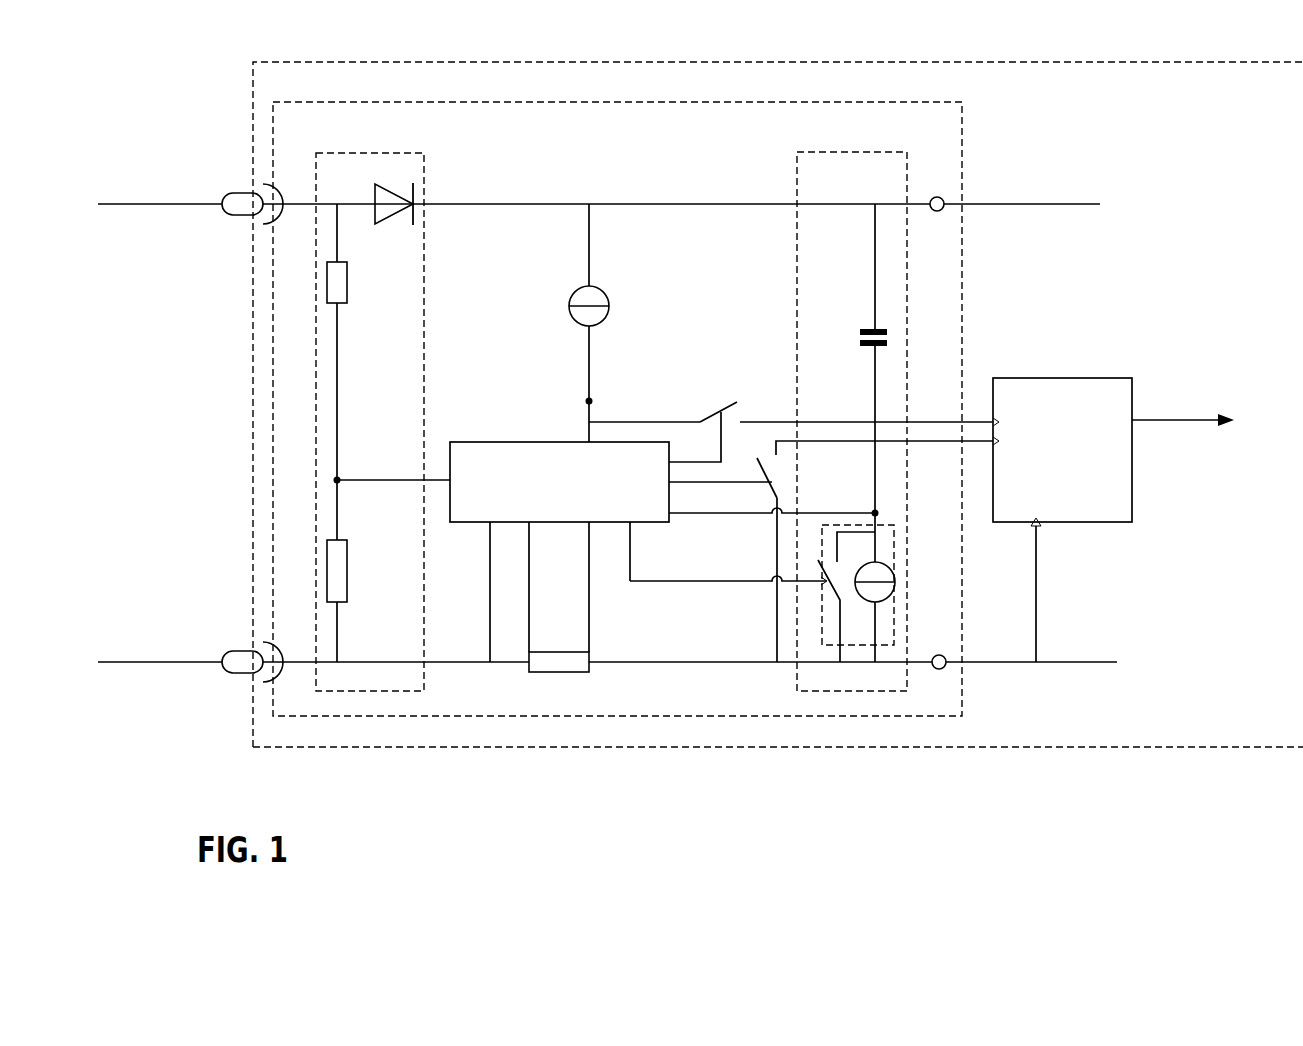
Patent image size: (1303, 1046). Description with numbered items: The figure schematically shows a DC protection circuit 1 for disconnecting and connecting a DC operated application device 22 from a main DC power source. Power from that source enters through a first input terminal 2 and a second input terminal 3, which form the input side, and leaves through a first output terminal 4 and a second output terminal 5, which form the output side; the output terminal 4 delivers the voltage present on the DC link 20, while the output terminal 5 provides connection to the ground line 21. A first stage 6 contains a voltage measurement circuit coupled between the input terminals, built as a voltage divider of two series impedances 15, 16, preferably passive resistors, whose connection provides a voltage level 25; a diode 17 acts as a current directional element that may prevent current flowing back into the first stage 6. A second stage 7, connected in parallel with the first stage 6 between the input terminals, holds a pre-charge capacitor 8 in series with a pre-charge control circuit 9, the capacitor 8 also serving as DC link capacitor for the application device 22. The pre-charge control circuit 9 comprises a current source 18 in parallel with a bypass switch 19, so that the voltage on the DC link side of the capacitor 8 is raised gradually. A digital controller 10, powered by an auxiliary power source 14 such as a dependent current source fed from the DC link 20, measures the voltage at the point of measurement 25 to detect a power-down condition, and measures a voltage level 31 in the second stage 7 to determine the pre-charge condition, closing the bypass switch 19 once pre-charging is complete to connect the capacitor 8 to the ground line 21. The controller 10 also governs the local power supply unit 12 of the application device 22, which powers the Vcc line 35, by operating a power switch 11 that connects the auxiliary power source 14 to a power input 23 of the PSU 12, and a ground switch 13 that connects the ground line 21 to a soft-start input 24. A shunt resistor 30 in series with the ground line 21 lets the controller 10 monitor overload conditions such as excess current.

The DC protection circuit 1 is at (617, 398).
The first input terminal 2 is at (255, 193).
The second input terminal 3 is at (255, 650).
The first output terminal 4 is at (937, 192).
The second output terminal 5 is at (939, 649).
The first stage 6 is at (370, 410).
The second stage 7 is at (852, 407).
The pre-charge capacitor 8 is at (868, 358).
The pre-charge control circuit 9 is at (858, 585).
The digital controller 10 is at (559, 552).
The power switch 11 is at (663, 424).
The local power supply unit 12 is at (1062, 520).
The ground switch 13 is at (723, 560).
The auxiliary power source 14 is at (574, 323).
The impedance 15 is at (350, 342).
The impedance 16 is at (351, 571).
The diode 17 is at (394, 197).
The current source 18 is at (866, 587).
The bypass switch 19 is at (735, 611).
The DC link 20 is at (599, 190).
The ground line 21 is at (607, 651).
The DC operated application device 22 is at (778, 390).
The power input 23 is at (884, 412).
The soft-start input 24 is at (900, 452).
The voltage level 25 is at (392, 469).
The shunt resistor 30 is at (559, 674).
The voltage level 31 is at (774, 503).
The Vcc line 35 is at (1206, 389).